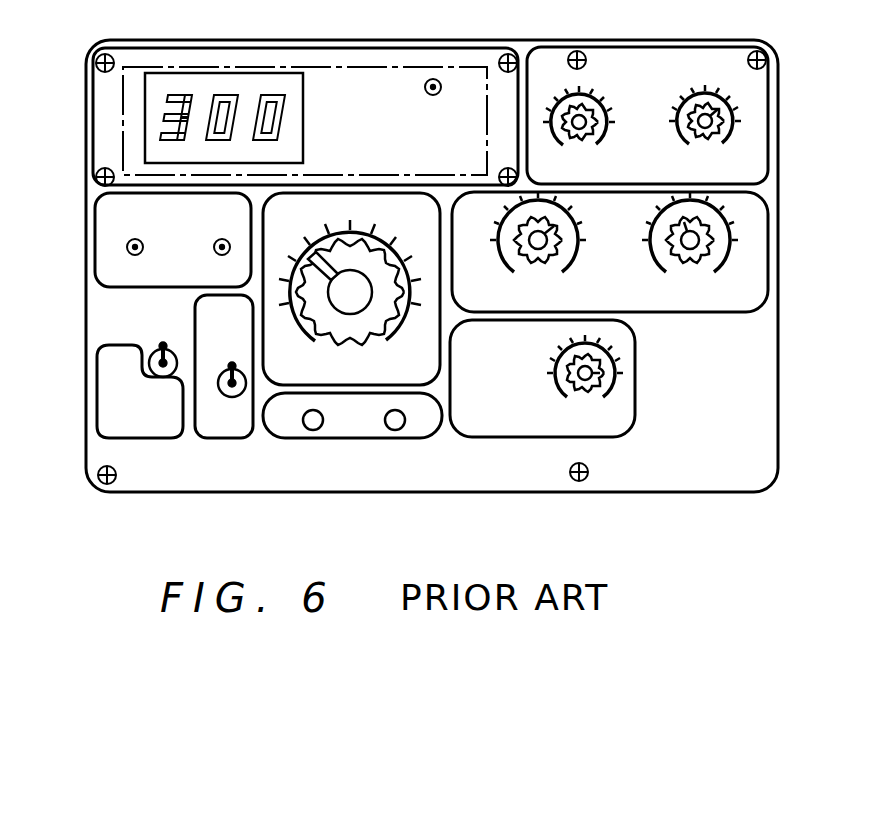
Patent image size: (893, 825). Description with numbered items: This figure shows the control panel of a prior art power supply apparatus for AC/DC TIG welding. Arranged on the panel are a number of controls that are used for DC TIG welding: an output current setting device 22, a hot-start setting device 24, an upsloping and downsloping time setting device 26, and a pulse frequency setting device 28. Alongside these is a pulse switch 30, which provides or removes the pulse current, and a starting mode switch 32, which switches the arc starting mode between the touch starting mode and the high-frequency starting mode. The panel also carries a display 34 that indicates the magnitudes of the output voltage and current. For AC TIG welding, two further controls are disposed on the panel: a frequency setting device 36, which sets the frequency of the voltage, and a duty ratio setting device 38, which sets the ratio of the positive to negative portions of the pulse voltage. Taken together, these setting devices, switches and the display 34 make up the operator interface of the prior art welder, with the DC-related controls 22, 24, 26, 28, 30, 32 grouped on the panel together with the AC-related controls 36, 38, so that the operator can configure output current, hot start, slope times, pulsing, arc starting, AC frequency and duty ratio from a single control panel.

The output current setting device 22 is at (332, 325).
The hot-start setting device 24 is at (595, 393).
The upsloping and downsloping time setting device 26 is at (567, 267).
The pulse frequency setting device 28 is at (715, 272).
The pulse switch 30 is at (105, 203).
The starting mode switch 32 is at (160, 362).
The display 34 is at (202, 83).
The frequency setting device 36 is at (615, 90).
The duty ratio setting device 38 is at (727, 70).